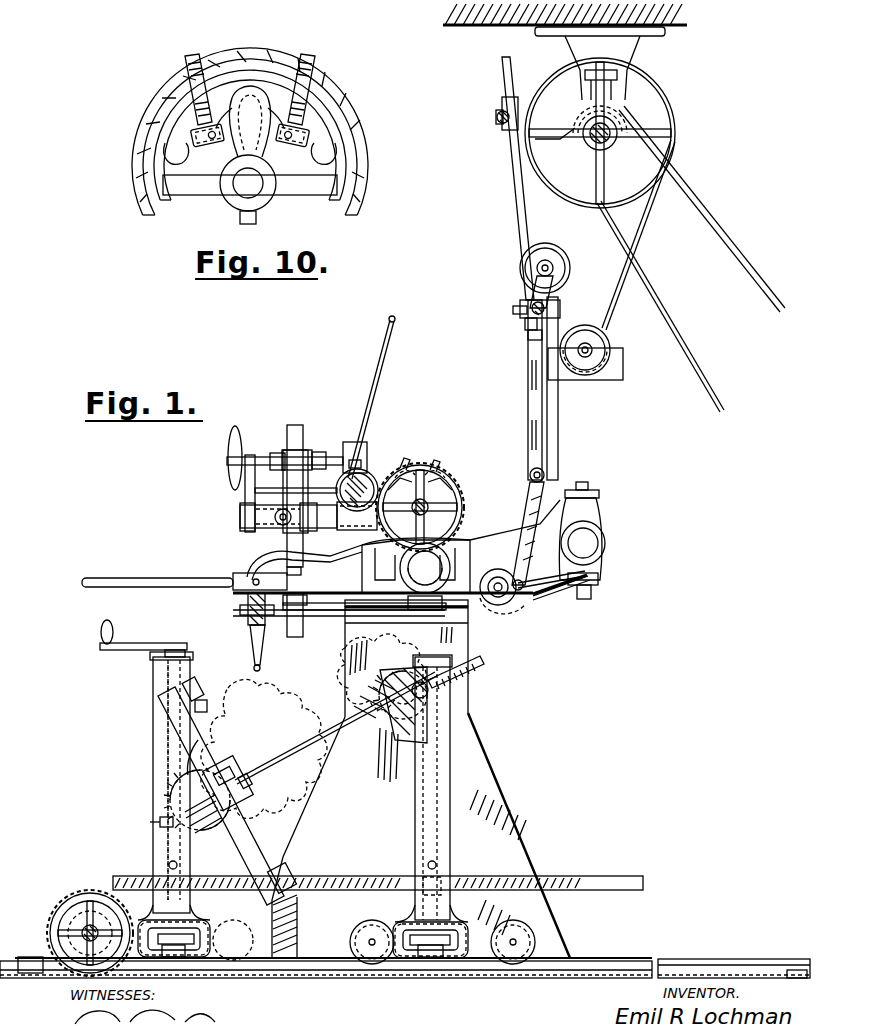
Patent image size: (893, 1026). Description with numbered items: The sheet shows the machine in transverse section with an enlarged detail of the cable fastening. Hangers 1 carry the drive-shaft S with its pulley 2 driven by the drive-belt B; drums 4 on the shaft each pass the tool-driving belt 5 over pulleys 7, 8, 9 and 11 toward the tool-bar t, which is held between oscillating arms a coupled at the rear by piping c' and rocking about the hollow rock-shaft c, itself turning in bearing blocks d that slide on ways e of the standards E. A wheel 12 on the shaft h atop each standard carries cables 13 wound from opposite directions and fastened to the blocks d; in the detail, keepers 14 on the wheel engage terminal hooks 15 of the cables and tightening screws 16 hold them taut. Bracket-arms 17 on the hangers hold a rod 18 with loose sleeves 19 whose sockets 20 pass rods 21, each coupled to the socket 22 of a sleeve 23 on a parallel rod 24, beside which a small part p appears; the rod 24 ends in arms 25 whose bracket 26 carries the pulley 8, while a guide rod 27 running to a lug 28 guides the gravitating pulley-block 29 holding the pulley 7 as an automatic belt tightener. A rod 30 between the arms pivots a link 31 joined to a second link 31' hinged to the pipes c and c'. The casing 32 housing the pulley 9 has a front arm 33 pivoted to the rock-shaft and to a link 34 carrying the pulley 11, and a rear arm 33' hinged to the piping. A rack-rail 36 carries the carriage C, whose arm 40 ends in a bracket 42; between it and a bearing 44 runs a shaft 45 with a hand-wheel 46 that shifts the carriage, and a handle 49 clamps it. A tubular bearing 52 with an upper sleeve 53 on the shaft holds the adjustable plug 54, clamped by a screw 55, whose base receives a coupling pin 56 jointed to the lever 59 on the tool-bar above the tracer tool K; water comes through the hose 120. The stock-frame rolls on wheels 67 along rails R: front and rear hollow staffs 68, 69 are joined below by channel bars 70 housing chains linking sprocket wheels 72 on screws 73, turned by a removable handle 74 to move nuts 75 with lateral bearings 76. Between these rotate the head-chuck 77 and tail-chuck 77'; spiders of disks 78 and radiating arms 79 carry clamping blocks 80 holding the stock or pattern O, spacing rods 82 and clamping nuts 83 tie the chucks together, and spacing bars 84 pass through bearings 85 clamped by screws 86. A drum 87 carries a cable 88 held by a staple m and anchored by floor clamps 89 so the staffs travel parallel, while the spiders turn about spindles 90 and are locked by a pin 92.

In FIG. 1, the hangers 1 is at (632, 47).
In FIG. 1, the pulley 2 is at (618, 158).
In FIG. 1, the drums 4 is at (560, 195).
In FIG. 1, the tool-driving belt 5 is at (648, 235).
In FIG. 1, the pulley 7 is at (592, 327).
In FIG. 1, the pulley 8 is at (560, 262).
In FIG. 1, the pulley 9 is at (545, 585).
In FIG. 1, the pulley 11 is at (294, 638).
In FIG. 10, the wheel 12 is at (352, 163).
In FIG. 1, the wheel 12 is at (440, 470).
In FIG. 10, the cable 13 is at (148, 135).
In FIG. 1, the cable 13 is at (404, 462).
In FIG. 10, the keepers 14 is at (175, 165).
In FIG. 1, the keepers 14 is at (430, 507).
In FIG. 10, the terminal hooks 15 is at (204, 133).
In FIG. 1, the terminal hooks 15 is at (440, 475).
In FIG. 10, the tightening screws 16 is at (300, 64).
In FIG. 1, the tightening screws 16 is at (412, 468).
In FIG. 1, the bracket-arms 17 is at (548, 115).
In FIG. 1, the rod 18 is at (501, 126).
In FIG. 1, the sleeves 19 is at (498, 120).
In FIG. 1, the socket 20 is at (502, 106).
In FIG. 1, the rod 21 is at (502, 63).
In FIG. 1, the socket 22 is at (520, 300).
In FIG. 1, the sleeve 23 is at (527, 324).
In FIG. 1, the rod 24 is at (545, 305).
In FIG. 1, the arms 25 is at (542, 405).
In FIG. 1, the bracket 26 is at (550, 290).
In FIG. 1, the guide rod 27 is at (558, 440).
In FIG. 1, the lug 28 is at (548, 475).
In FIG. 1, the pulley-block 29 is at (623, 368).
In FIG. 1, the rod 30 is at (568, 490).
In FIG. 1, the link 31 is at (602, 571).
In FIG. 1, the second link 31' is at (609, 597).
In FIG. 1, the casing 32 is at (505, 606).
In FIG. 1, the front arm 33 is at (419, 598).
In FIG. 1, the rear arm 33' is at (559, 601).
In FIG. 1, the link 34 is at (315, 560).
In FIG. 1, the rack-rail 36 is at (348, 478).
In FIG. 1, the arm 40 is at (243, 513).
In FIG. 1, the bracket 42 is at (255, 489).
In FIG. 1, the bearing 44 is at (356, 442).
In FIG. 1, the shaft 45 is at (268, 453).
In FIG. 1, the hand-wheel 46 is at (230, 440).
In FIG. 1, the handle 49 is at (245, 466).
In FIG. 1, the tubular bearing 52 is at (310, 453).
In FIG. 1, the upper lateral sleeve 53 is at (280, 458).
In FIG. 1, the plug 54 is at (295, 425).
In FIG. 1, the screw 55 is at (275, 519).
In FIG. 1, the coupling pin 56 is at (248, 573).
In FIG. 1, the lever 59 is at (143, 578).
In FIG. 1, the wheels 67 is at (240, 962).
In FIG. 1, the front staffs 68 is at (153, 745).
In FIG. 1, the rear staffs 69 is at (450, 748).
In FIG. 1, the channel bar 70 is at (185, 925).
In FIG. 1, the sprocket wheels 72 is at (205, 925).
In FIG. 1, the screw-rods 73 is at (166, 680).
In FIG. 1, the handle 74 is at (128, 643).
In FIG. 1, the nut 75 is at (185, 800).
In FIG. 1, the lateral bearing 76 is at (405, 725).
In FIG. 1, the head-chuck 77 is at (146, 800).
In FIG. 1, the tail-chuck 77' is at (448, 693).
In FIG. 1, the disks 78 is at (195, 735).
In FIG. 1, the radiating arms 79 is at (190, 738).
In FIG. 1, the clamping blocks 80 is at (236, 768).
In FIG. 1, the spacing rods 82 is at (318, 740).
In FIG. 1, the clamping nuts 83 is at (445, 672).
In FIG. 1, the spacing bar 84 is at (610, 878).
In FIG. 1, the bearings 85 is at (445, 873).
In FIG. 1, the clamping screw 86 is at (170, 862).
In FIG. 1, the drum 87 is at (52, 912).
In FIG. 1, the cable 88 is at (97, 900).
In FIG. 1, the clamps 89 is at (28, 957).
In FIG. 1, the spindles 90 is at (178, 826).
In FIG. 1, the pin 92 is at (158, 822).
In FIG. 1, the hose 120 is at (396, 324).
In FIG. 1, the drive-belt B is at (700, 200).
In FIG. 1, the shaft S is at (612, 125).
In FIG. 1, the carriage C is at (338, 455).
In FIG. 1, the tracer tool K is at (250, 648).
In FIG. 1, the standards E is at (510, 836).
In FIG. 1, the stock or pattern O is at (345, 790).
In FIG. 1, the rails R is at (640, 958).
In FIG. 1, the oscillating arms a is at (575, 520).
In FIG. 1, the rock-shaft c is at (398, 621).
In FIG. 1, the piping c' is at (598, 543).
In FIG. 1, the bearing blocks d is at (455, 560).
In FIG. 1, the ways e is at (345, 612).
In FIG. 1, the shaft h is at (445, 525).
In FIG. 1, the staple m is at (90, 925).
In FIG. 1, the pin p is at (528, 340).
In FIG. 1, the tool-bar t is at (246, 612).